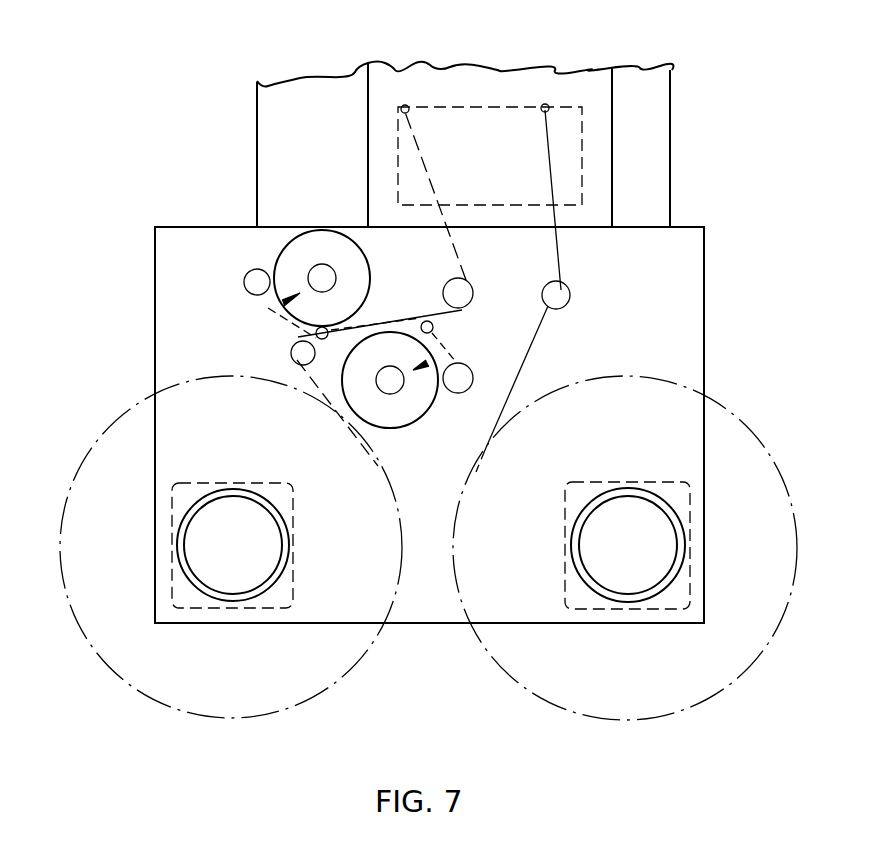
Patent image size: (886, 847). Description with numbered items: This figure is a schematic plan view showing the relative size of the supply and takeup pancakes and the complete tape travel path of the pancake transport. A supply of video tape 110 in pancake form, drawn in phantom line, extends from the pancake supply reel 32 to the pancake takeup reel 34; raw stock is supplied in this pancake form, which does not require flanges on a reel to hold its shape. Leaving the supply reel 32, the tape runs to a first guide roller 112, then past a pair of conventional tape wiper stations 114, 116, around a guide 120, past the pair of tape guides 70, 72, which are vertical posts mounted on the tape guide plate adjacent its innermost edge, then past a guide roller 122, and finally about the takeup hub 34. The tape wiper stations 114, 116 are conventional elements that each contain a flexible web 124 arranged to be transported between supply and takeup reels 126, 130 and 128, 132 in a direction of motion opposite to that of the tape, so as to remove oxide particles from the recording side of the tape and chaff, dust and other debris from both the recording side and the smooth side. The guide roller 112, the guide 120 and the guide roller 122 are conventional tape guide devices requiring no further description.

The supply reel 32 is at (183, 557).
The takeup reel 34 is at (676, 557).
The tape guide 70 is at (407, 106).
The tape guide 72 is at (547, 105).
The video tape 110 is at (185, 678).
The first guide roller 112 is at (300, 354).
The tape wiper station 114 is at (300, 293).
The tape wiper station 116 is at (413, 370).
The guide 120 is at (458, 293).
The guide roller 122 is at (556, 295).
The flexible web 124 is at (277, 317).
The supply reel 126 is at (322, 278).
The supply reel 128 is at (389, 384).
The takeup reel 130 is at (257, 282).
The takeup reel 132 is at (457, 380).